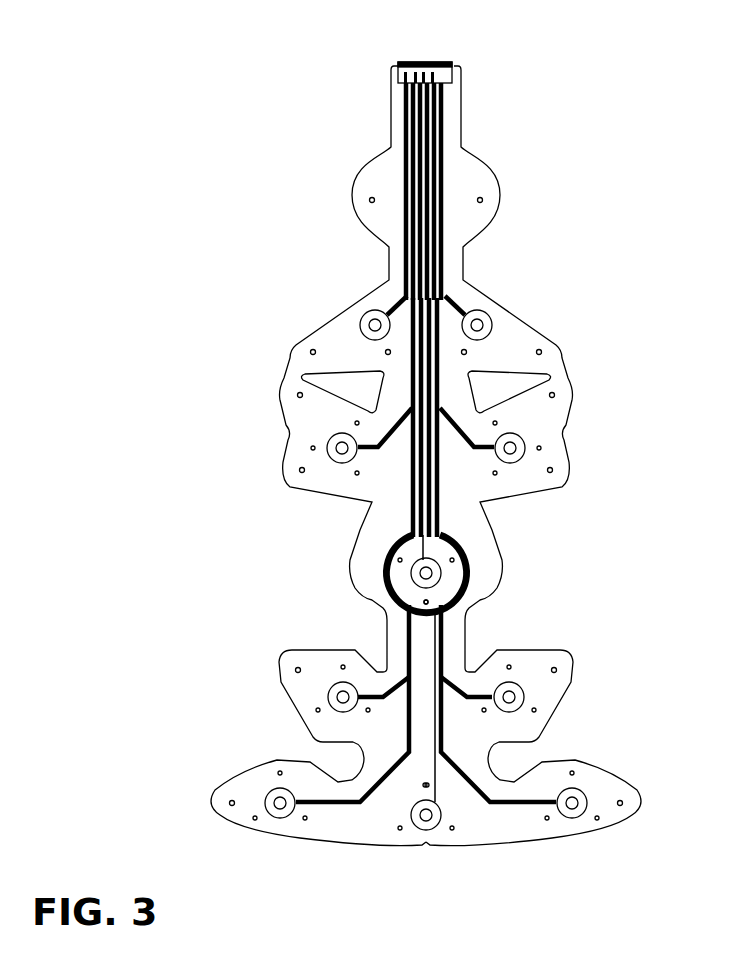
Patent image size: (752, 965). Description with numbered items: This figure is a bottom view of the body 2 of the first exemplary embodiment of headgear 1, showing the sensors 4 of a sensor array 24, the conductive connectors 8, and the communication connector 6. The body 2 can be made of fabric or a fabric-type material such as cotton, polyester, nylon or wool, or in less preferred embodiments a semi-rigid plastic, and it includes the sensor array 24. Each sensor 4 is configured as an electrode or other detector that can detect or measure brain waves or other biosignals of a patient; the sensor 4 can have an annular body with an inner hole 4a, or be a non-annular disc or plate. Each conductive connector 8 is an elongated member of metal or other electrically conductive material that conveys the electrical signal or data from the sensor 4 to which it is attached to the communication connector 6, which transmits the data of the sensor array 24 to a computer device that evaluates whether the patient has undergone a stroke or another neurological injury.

The headgear 1 is at (566, 517).
The body 2 is at (485, 830).
The sensor 4 is at (515, 445).
The inner hole 4a is at (430, 578).
The communication connector 6 is at (403, 77).
The conductive connector 8 is at (445, 165).
The sensor array 24 is at (296, 430).